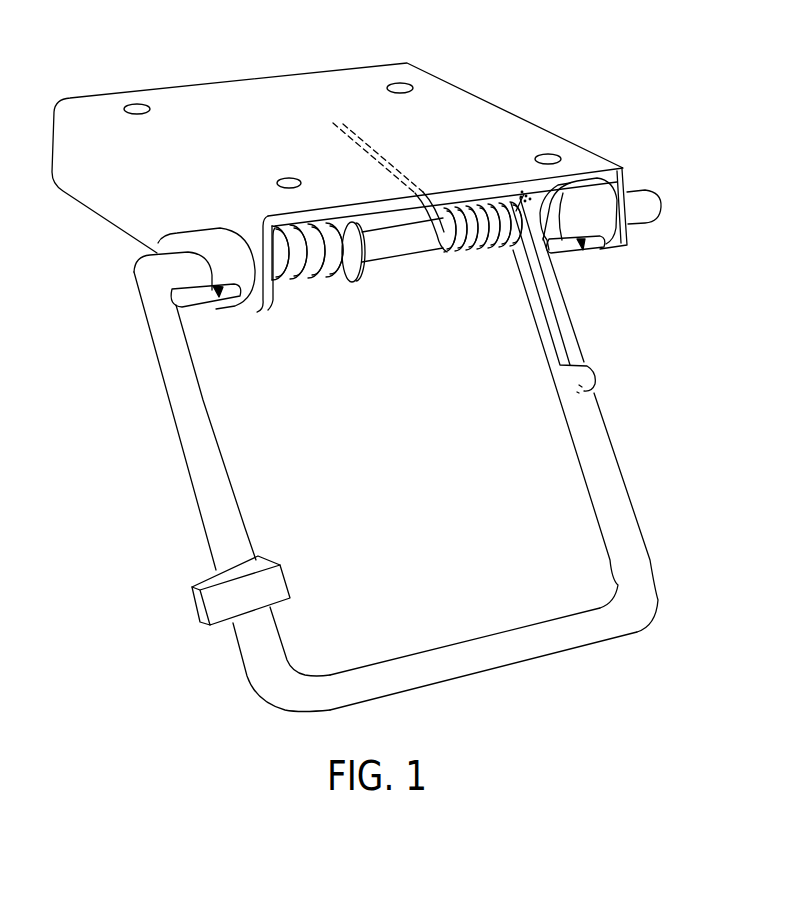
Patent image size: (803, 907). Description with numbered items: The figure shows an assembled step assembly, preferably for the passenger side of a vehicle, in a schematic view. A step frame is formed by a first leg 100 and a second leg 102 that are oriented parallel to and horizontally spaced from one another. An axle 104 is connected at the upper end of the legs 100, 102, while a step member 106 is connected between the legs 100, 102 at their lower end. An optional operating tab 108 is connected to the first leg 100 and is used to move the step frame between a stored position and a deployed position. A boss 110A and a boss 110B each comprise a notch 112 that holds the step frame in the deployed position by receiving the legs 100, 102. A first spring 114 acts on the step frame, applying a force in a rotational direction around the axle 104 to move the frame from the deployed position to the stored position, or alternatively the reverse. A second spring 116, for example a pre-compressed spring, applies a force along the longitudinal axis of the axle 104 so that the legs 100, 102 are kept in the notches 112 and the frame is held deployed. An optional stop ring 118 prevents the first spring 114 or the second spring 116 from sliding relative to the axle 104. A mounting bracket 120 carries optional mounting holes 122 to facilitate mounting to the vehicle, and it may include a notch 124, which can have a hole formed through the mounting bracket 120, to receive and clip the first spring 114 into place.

The first leg 100 is at (190, 487).
The second leg 102 is at (607, 430).
The axle 104 is at (397, 260).
The step member 106 is at (487, 673).
The operating tab 108 is at (197, 610).
The boss 110A is at (620, 178).
The boss 110B is at (185, 235).
The notch 112 is at (222, 300).
The first spring 114 is at (473, 256).
The second spring 116 is at (290, 287).
The stop ring 118 is at (353, 281).
The mounting bracket 120 is at (243, 77).
The mounting holes 122 is at (137, 104).
The notch 124 is at (334, 123).